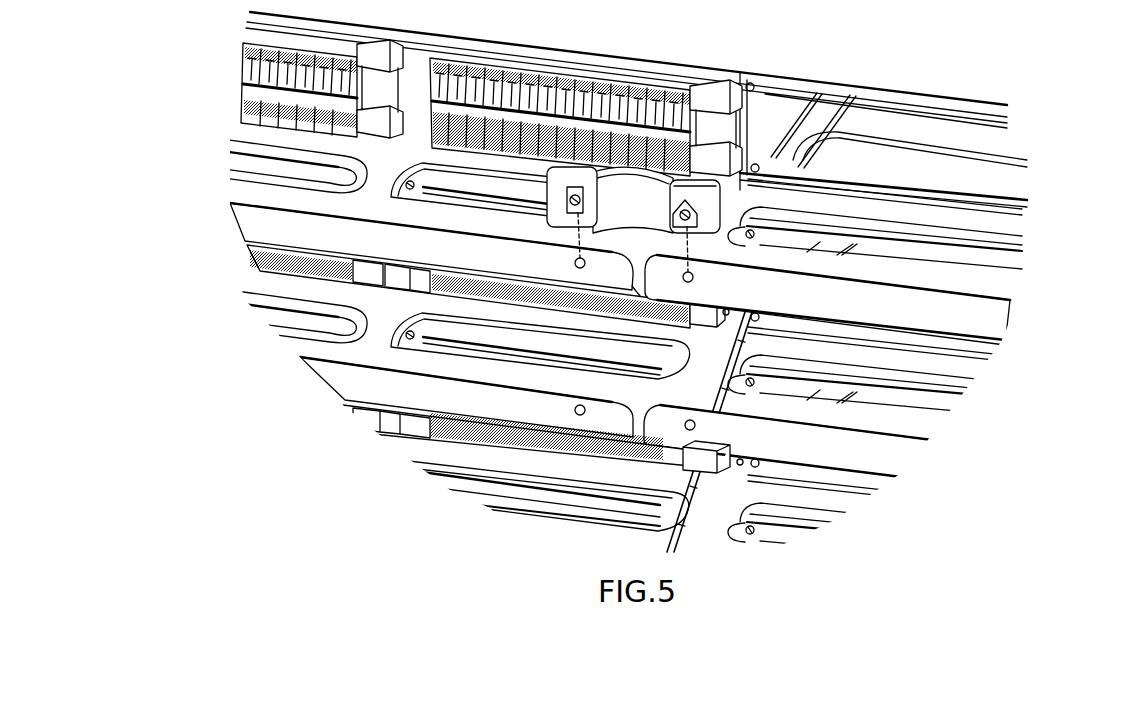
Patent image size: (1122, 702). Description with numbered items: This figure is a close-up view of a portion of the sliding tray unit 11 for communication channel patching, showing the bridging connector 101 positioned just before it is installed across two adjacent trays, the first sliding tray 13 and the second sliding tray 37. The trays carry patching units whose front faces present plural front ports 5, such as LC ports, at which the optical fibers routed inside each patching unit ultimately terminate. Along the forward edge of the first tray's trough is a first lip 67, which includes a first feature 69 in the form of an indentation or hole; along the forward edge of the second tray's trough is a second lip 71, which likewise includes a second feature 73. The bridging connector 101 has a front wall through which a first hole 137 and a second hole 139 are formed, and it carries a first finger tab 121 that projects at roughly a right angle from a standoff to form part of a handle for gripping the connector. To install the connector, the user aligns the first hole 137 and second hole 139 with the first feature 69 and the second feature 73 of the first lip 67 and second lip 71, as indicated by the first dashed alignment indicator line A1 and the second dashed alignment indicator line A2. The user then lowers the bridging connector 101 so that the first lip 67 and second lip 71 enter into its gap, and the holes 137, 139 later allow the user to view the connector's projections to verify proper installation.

The front ports 5 is at (239, 67).
The sliding tray unit 11 is at (798, 50).
The first sliding tray 13 is at (1021, 275).
The second sliding tray 37 is at (230, 189).
The first lip 67 is at (815, 302).
The first feature 69 is at (694, 280).
The second lip 71 is at (435, 256).
The second feature 73 is at (577, 263).
The bridging connector 101 is at (532, 165).
The first finger tab 121 is at (729, 205).
The first hole 137 is at (702, 228).
The second hole 139 is at (573, 202).
The first dashed alignment indicator line A1 is at (690, 248).
The second dashed alignment indicator line A2 is at (583, 235).